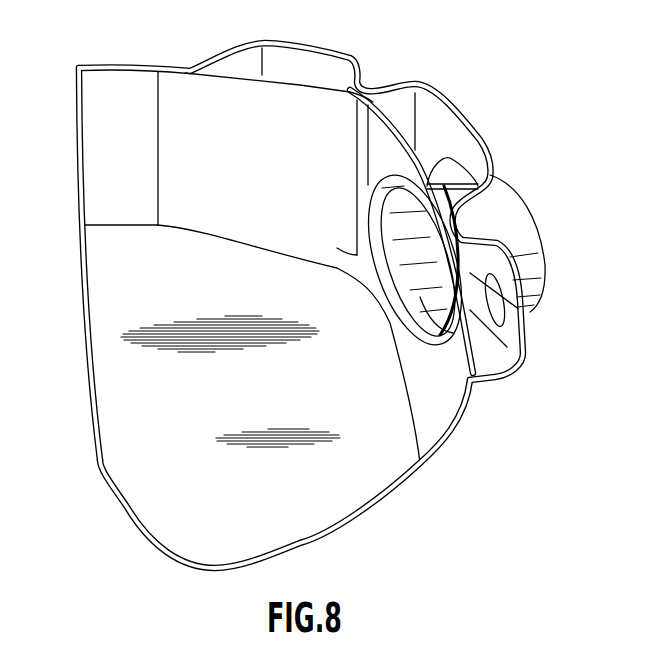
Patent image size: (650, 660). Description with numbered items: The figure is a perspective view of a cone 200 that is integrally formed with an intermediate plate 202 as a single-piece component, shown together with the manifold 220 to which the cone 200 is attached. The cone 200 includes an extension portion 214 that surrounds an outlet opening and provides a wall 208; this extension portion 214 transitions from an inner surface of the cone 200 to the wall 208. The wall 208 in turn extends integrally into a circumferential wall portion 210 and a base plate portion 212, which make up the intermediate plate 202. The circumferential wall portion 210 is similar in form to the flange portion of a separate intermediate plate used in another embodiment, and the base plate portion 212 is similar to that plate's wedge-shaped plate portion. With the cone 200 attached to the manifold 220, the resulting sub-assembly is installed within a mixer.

The cone 200 is at (520, 313).
The intermediate plate 202 is at (100, 460).
The wall 208 is at (380, 160).
The circumferential wall portion 210 is at (128, 95).
The base plate portion 212 is at (320, 502).
The extension portion 214 is at (430, 325).
The manifold 220 is at (523, 242).